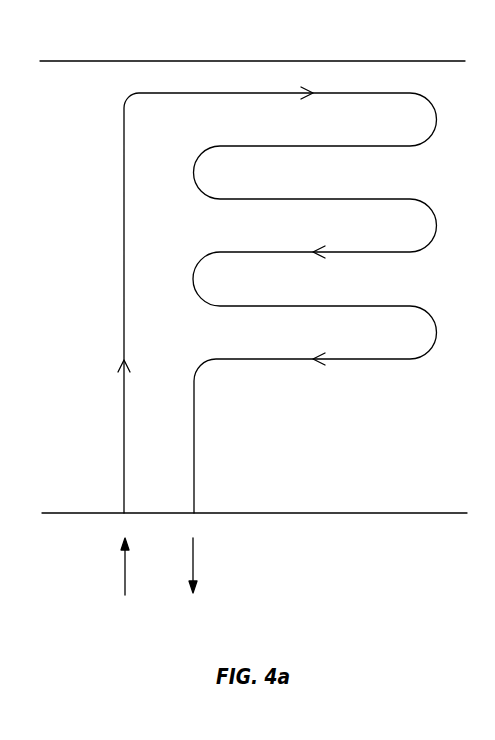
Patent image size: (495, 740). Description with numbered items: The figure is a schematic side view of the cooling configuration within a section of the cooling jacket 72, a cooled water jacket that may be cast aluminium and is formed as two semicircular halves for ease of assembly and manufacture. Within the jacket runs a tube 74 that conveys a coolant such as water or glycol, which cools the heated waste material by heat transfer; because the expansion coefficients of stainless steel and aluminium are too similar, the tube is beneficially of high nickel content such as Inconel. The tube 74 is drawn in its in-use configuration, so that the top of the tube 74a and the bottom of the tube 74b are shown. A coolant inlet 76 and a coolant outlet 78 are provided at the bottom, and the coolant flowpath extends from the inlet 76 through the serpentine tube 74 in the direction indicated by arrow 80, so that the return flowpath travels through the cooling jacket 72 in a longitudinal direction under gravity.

The cooling jacket 72 is at (254, 529).
The tube 74 is at (262, 360).
The top of the tube 74a is at (98, 60).
The bottom of the tube 74b is at (98, 514).
The coolant inlet 76 is at (125, 583).
The coolant outlet 78 is at (193, 583).
The arrow 80 is at (310, 95).